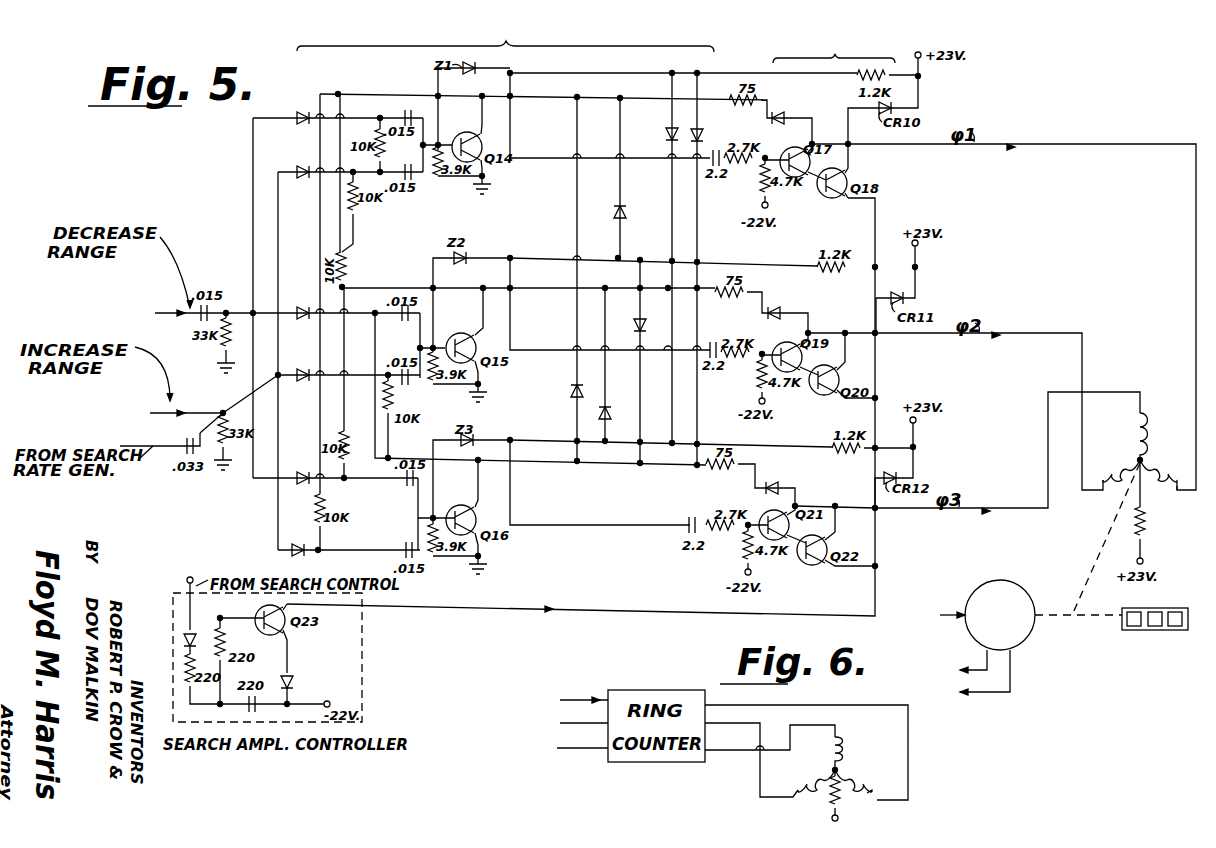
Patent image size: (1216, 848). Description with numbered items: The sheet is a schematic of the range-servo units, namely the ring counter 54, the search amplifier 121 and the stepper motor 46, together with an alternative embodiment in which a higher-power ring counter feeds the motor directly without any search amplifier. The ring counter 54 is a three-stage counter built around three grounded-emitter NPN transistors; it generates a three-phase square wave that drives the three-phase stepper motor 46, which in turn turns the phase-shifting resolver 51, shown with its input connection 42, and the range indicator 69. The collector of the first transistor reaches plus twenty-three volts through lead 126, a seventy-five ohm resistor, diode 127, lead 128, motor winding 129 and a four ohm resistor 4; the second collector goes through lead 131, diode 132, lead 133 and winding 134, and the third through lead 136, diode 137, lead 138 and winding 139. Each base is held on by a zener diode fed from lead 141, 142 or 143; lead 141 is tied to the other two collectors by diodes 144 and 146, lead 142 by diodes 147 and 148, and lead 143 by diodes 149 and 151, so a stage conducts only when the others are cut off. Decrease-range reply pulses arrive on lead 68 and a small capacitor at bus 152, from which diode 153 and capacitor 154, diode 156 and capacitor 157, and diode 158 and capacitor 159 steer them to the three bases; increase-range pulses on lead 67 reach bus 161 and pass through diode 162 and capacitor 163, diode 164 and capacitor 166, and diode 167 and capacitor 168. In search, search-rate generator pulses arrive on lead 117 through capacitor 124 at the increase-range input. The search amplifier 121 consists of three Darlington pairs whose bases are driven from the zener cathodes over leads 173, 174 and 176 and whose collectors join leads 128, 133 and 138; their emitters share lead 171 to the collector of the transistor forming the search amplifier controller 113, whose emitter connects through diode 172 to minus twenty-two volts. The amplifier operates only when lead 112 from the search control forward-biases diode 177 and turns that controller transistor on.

In FIG. 5, the four ohm resistor 4 is at (1146, 509).
In FIG. 5, the resolver input line 42 is at (942, 610).
In FIG. 5, the stepper motor 46 is at (1144, 438).
In FIG. 6, the stepper motor 46 is at (877, 751).
In FIG. 5, the phase-shifting resolver 51 is at (1028, 591).
In FIG. 5, the ring counter 54 is at (505, 38).
In FIG. 5, the lead 67 is at (147, 412).
In FIG. 6, the lead 67 is at (557, 713).
In FIG. 5, the lead 68 is at (167, 302).
In FIG. 6, the lead 68 is at (573, 687).
In FIG. 5, the range indicator 69 is at (1165, 611).
In FIG. 5, the lead 112 is at (205, 603).
In FIG. 5, the search amplifier controller 113 is at (337, 649).
In FIG. 5, the lead 117 is at (160, 432).
In FIG. 6, the lead 117 is at (562, 760).
In FIG. 5, the search amplifier 121 is at (828, 39).
In FIG. 5, the capacitor 124 is at (193, 430).
In FIG. 5, the lead 126 is at (597, 95).
In FIG. 5, the diode 127 is at (784, 112).
In FIG. 5, the lead 128 is at (1089, 140).
In FIG. 5, the winding 129 is at (1168, 500).
In FIG. 5, the lead 131 is at (557, 288).
In FIG. 5, the diode 132 is at (768, 318).
In FIG. 5, the lead 133 is at (1045, 336).
In FIG. 5, the winding 134 is at (1118, 465).
In FIG. 5, the lead 136 is at (612, 468).
In FIG. 5, the diode 137 is at (785, 474).
In FIG. 5, the lead 138 is at (1031, 502).
In FIG. 5, the winding 139 is at (1150, 397).
In FIG. 5, the lead 141 is at (581, 70).
In FIG. 5, the lead 142 is at (557, 253).
In FIG. 5, the lead 143 is at (557, 437).
In FIG. 5, the diode 144 is at (666, 130).
In FIG. 5, the diode 146 is at (712, 122).
In FIG. 5, the diode 147 is at (655, 320).
In FIG. 5, the diode 148 is at (626, 215).
In FIG. 5, the diode 149 is at (571, 392).
In FIG. 5, the diode 151 is at (610, 410).
In FIG. 5, the bus 152 is at (253, 190).
In FIG. 5, the diode 153 is at (300, 107).
In FIG. 5, the capacitor 154 is at (416, 108).
In FIG. 5, the diode 156 is at (304, 301).
In FIG. 5, the capacitor 157 is at (395, 326).
In FIG. 5, the diode 158 is at (300, 466).
In FIG. 5, the capacitor 159 is at (402, 489).
In FIG. 5, the bus 161 is at (272, 361).
In FIG. 5, the diode 162 is at (300, 162).
In FIG. 5, the capacitor 163 is at (396, 165).
In FIG. 5, the diode 164 is at (304, 362).
In FIG. 5, the capacitor 166 is at (404, 384).
In FIG. 5, the diode 167 is at (300, 539).
In FIG. 5, the capacitor 168 is at (396, 546).
In FIG. 5, the lead 171 is at (883, 219).
In FIG. 5, the diode 172 is at (300, 676).
In FIG. 5, the lead 173 is at (512, 128).
In FIG. 5, the lead 174 is at (513, 330).
In FIG. 5, the lead 176 is at (513, 505).
In FIG. 5, the diode 177 is at (192, 638).